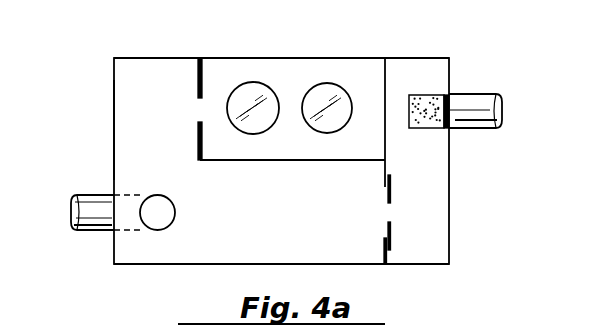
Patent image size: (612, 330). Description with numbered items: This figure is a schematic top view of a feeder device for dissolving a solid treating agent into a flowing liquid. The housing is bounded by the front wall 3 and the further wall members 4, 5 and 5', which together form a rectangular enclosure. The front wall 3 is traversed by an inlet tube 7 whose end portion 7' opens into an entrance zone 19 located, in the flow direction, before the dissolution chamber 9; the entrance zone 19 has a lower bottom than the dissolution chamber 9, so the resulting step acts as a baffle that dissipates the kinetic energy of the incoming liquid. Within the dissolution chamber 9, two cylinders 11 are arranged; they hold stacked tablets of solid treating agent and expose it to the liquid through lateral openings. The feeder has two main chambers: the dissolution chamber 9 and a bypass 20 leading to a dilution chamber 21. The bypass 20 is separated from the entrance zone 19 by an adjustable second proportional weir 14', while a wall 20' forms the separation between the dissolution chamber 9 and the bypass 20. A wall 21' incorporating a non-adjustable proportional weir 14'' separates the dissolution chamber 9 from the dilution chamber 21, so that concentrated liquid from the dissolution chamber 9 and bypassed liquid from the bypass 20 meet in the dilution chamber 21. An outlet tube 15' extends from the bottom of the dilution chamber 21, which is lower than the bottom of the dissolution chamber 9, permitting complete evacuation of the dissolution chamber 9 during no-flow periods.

The front wall 3 is at (449, 230).
The wall member 4 is at (95, 118).
The wall member 5 is at (281, 40).
The wall member 5' is at (281, 283).
The inlet tube 7 is at (479, 129).
The end portion of the inlet tube 7' is at (459, 152).
The dissolution chamber 9 is at (293, 132).
The cylinders 11 is at (304, 97).
The second proportional weir 14' is at (347, 161).
The non-adjustable proportional weir 14'' is at (122, 95).
The outlet tube 15' is at (108, 190).
The entrance zone 19 is at (418, 241).
The bypass 20 is at (249, 238).
The wall 20' is at (292, 184).
The dilution chamber 21 is at (129, 90).
The wall 21' is at (160, 90).